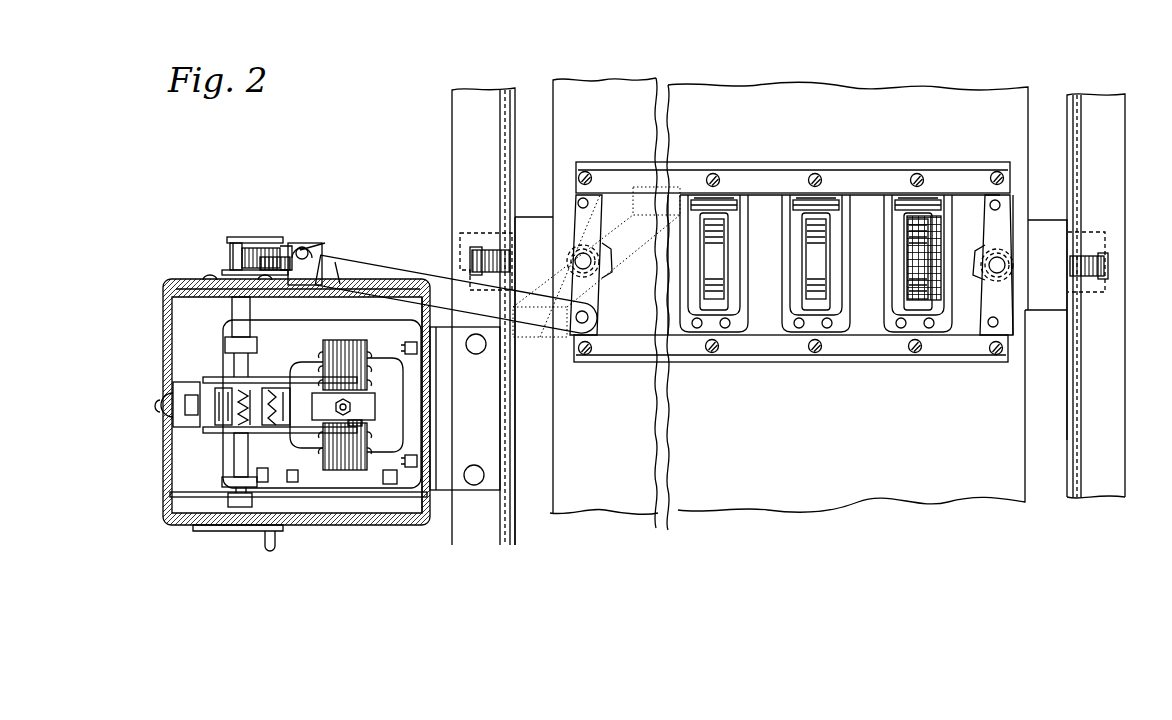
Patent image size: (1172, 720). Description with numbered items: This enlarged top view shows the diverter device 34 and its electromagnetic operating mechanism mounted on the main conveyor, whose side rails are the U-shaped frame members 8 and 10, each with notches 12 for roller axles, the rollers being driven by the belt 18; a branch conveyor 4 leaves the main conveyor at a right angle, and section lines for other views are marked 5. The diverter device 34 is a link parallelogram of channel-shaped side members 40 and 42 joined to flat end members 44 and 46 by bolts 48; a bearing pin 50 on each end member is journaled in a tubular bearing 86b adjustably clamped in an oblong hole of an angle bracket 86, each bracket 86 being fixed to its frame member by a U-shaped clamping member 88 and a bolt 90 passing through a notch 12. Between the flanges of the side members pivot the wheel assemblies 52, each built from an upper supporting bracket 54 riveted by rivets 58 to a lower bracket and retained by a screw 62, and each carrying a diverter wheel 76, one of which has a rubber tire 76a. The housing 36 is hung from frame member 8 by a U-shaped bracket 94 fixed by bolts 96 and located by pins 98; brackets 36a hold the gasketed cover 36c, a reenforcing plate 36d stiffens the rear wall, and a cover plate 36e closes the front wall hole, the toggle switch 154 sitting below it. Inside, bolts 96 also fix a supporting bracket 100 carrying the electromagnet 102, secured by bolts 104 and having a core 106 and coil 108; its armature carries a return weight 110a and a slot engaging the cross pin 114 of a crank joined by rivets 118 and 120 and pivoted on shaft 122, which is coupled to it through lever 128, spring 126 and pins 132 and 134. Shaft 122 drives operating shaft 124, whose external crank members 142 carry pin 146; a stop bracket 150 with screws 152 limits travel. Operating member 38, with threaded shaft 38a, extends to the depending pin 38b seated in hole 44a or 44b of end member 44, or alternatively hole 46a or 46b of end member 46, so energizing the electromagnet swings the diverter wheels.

The frame member 8 is at (483, 90).
The frame member 10 is at (1101, 94).
The notch 12 is at (476, 268).
The belt 18 is at (777, 86).
The diverter device 34 is at (717, 160).
The housing 36 is at (355, 518).
The bracket 36a is at (180, 385).
The gasketed cover 36c is at (165, 497).
The reenforcing plate 36d is at (190, 283).
The cover plate 36e is at (235, 530).
The operating member 38 is at (418, 274).
The threaded shaft 38a is at (318, 252).
The depending pin 38b is at (590, 317).
The side member 40 is at (640, 168).
The side member 42 is at (640, 360).
The end member 44 is at (598, 300).
The hole 44a is at (560, 347).
The hole 44b is at (589, 203).
The end member 46 is at (1013, 228).
The hole 46a is at (990, 325).
The hole 46b is at (992, 205).
The bolt 48 is at (585, 170).
The bearing pin 50 is at (575, 262).
The wheel assembly 52 is at (674, 278).
The upper supporting bracket 54 is at (797, 312).
The rivet 58 is at (797, 326).
The screw 62 is at (916, 175).
The diverter wheel 76 is at (816, 263).
The tire 76a is at (904, 242).
The angle bracket 86 is at (540, 222).
The tubular bearing 86b is at (1009, 257).
The U-shaped clamping member 88 is at (497, 235).
The bolt 90 is at (470, 247).
The U-shaped bracket 94 is at (455, 491).
The bolt 96 is at (417, 350).
The pin 98 is at (476, 354).
The supporting bracket 100 is at (405, 322).
The electromagnet 102 is at (342, 470).
The bolt 104 is at (302, 498).
The core 106 is at (345, 342).
The coil 108 is at (380, 362).
The weight 110a is at (375, 408).
The cross pin 114 is at (358, 422).
The rivet 118 is at (232, 378).
The rivet 120 is at (262, 392).
The shaft 122 is at (234, 462).
The operating shaft 124 is at (252, 320).
The helical tension spring 126 is at (222, 390).
The lever 128 is at (283, 392).
The pin 132 is at (290, 440).
The pin 134 is at (220, 433).
The crank member 142 is at (225, 262).
The pin 146 is at (252, 243).
The stop bracket 150 is at (285, 258).
The screw 152 is at (320, 245).
The double throw toggle switch 154 is at (276, 542).
The branch conveyor 4 is at (865, 143).
The section line 5- 5 is at (668, 195).